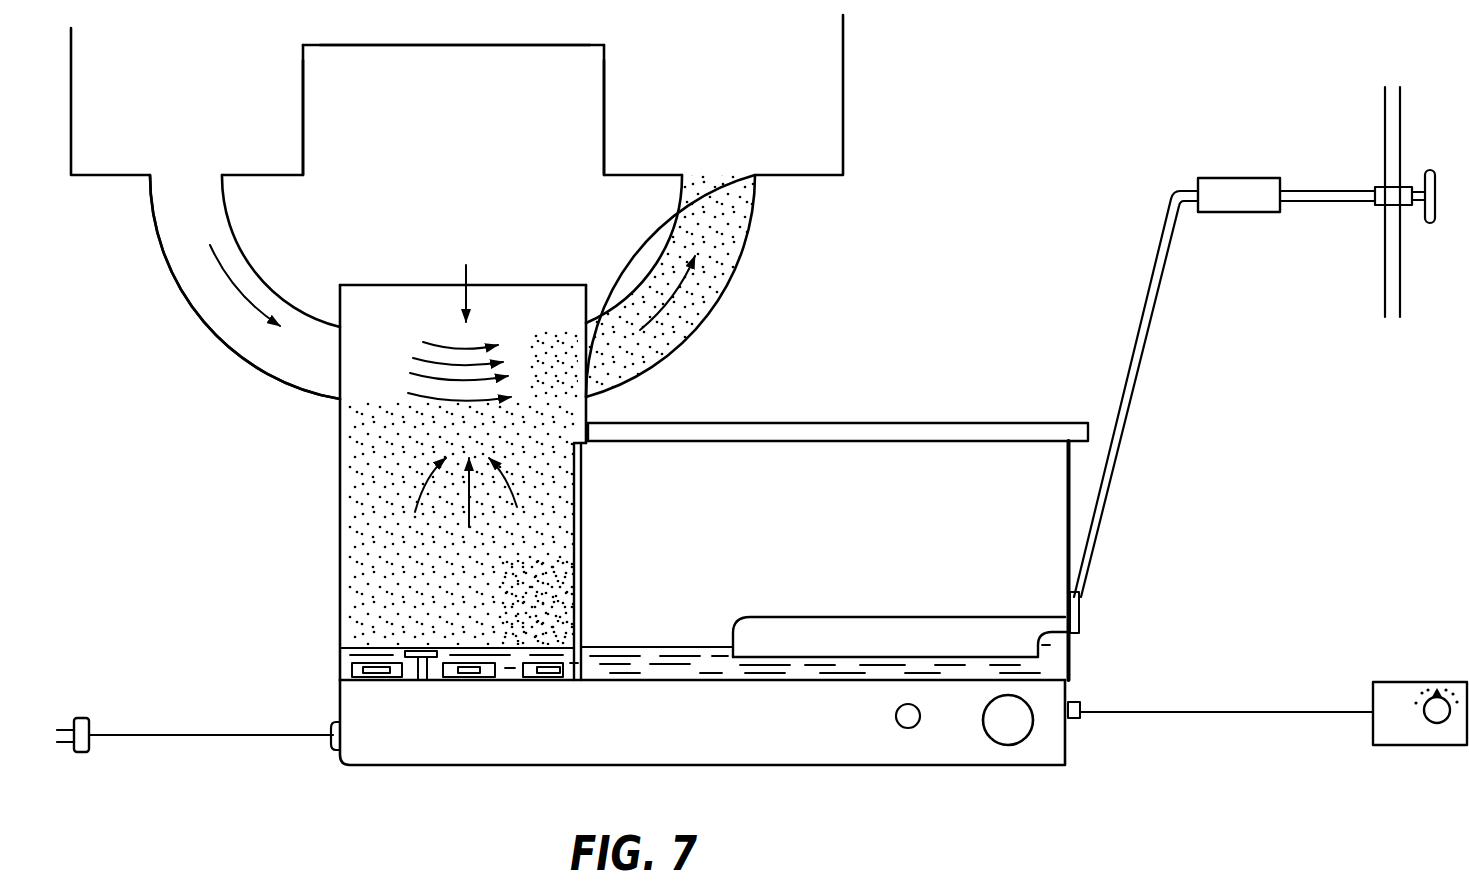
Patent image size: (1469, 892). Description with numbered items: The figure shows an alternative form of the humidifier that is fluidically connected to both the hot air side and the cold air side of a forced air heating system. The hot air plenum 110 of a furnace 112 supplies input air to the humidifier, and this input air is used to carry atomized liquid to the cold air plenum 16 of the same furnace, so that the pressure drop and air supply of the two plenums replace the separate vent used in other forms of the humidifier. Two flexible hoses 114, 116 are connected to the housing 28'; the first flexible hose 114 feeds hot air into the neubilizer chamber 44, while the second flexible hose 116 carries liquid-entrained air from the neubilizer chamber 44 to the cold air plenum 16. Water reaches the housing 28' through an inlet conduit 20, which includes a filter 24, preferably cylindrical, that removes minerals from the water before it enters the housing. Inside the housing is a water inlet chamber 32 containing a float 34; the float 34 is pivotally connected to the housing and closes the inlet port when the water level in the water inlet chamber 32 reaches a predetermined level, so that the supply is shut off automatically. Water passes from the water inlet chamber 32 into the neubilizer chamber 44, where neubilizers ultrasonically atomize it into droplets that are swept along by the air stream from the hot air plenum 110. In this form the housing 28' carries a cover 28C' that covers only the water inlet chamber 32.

The cold air plenum 16 is at (604, 103).
The inlet conduit 20 is at (1140, 407).
The filter 24 is at (1237, 206).
The housing 28' is at (1141, 560).
The cover 28C' is at (838, 401).
The water inlet chamber 32 is at (702, 561).
The float 34 is at (772, 623).
The neubilizer chamber 44 is at (463, 472).
The hot air plenum 110 is at (303, 103).
The furnace 112 is at (520, 48).
The flexible hose 114 is at (190, 292).
The flexible hose 116 is at (735, 277).